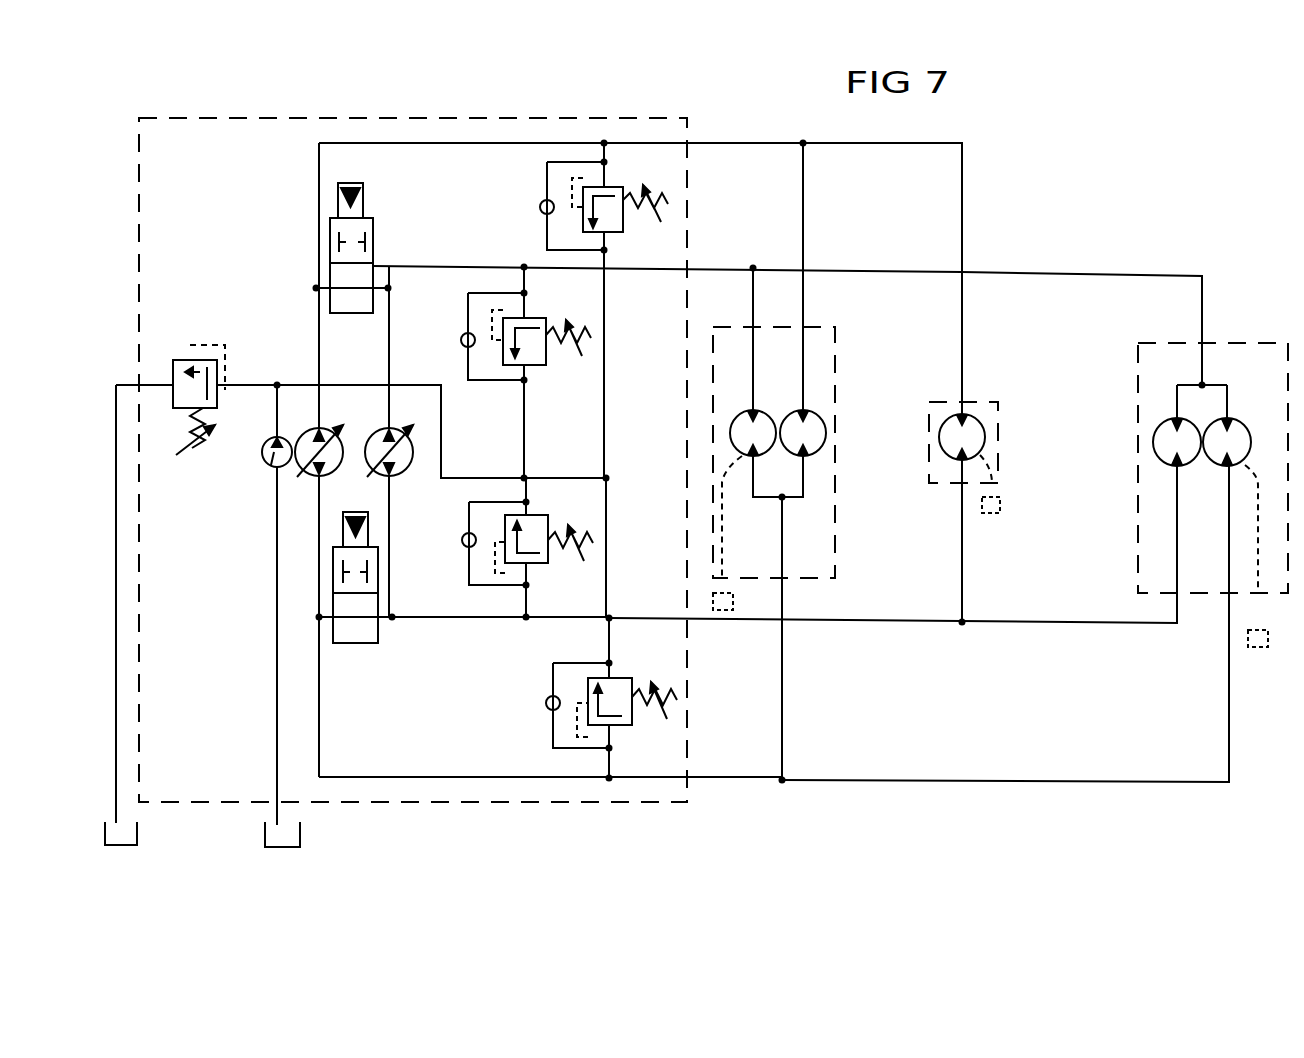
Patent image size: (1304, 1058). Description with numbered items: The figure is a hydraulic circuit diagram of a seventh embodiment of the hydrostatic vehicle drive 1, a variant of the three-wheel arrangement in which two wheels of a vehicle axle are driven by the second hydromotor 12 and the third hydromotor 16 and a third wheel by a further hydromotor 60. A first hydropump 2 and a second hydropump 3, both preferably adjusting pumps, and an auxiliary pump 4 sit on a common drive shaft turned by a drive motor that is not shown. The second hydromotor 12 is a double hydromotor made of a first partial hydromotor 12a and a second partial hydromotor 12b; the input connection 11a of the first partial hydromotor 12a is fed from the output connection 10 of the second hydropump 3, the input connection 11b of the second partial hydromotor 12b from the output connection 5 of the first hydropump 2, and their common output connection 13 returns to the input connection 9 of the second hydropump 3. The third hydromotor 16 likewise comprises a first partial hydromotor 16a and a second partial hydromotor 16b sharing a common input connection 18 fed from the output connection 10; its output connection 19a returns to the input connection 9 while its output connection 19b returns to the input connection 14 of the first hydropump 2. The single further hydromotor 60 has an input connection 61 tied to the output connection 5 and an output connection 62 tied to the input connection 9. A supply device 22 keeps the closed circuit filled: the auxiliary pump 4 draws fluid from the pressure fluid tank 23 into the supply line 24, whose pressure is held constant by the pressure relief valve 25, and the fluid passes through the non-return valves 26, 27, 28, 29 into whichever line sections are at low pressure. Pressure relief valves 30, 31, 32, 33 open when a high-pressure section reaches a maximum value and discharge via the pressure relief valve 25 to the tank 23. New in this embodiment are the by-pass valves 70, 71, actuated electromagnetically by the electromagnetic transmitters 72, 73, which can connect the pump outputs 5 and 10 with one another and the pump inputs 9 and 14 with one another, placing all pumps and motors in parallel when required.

The hydrostatic vehicle drive 1 is at (1137, 178).
The first hydropump 2 is at (276, 437).
The second hydropump 3 is at (377, 428).
The auxiliary pump 4 is at (272, 470).
The output connection of the first hydropump 5 is at (316, 428).
The input connection of the second hydropump 9 is at (393, 479).
The output connection of the second hydropump 10 is at (401, 428).
The input connection of the first partial hydromotor 12a 11a is at (755, 327).
The input connection of the second partial hydromotor 12b 11b is at (803, 327).
The second hydromotor 12 is at (822, 537).
The first partial hydromotor 12a is at (745, 433).
The second partial hydromotor 12b is at (812, 433).
The common output connection 13 is at (783, 580).
The input connection of the first hydropump 14 is at (316, 479).
The third hydromotor 16 is at (1200, 538).
The first partial hydromotor 16a is at (1165, 442).
The second partial hydromotor 16b is at (1237, 435).
The common input connection 18 is at (1205, 385).
The output connection of the first partial hydromotor 16a 19a is at (1175, 600).
The output connection of the second partial hydromotor 16b 19b is at (1226, 598).
The supply device 22 is at (243, 478).
The pressure fluid tank 23 is at (118, 848).
The supply line 24 is at (553, 478).
The pressure relief valve 25 is at (180, 370).
The non-return valve 26 is at (461, 337).
The non-return valve 27 is at (472, 548).
The non-return valve 28 is at (540, 207).
The non-return valve 29 is at (546, 703).
The pressure relief valve 30 is at (533, 365).
The pressure relief valve 31 is at (535, 563).
The pressure relief valve 32 is at (617, 186).
The pressure relief valve 33 is at (618, 725).
The further hydromotor 60 is at (975, 428).
The input connection of the further hydromotor 61 is at (962, 400).
The output connection of the further hydromotor 62 is at (962, 486).
The by-pass valve 70 is at (383, 233).
The by-pass valve 71 is at (358, 652).
The electromagnetic transmitter 72 is at (338, 203).
The electromagnetic transmitter 73 is at (362, 530).